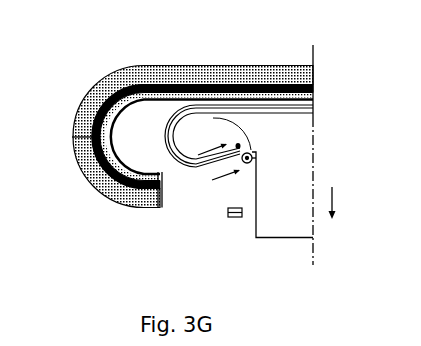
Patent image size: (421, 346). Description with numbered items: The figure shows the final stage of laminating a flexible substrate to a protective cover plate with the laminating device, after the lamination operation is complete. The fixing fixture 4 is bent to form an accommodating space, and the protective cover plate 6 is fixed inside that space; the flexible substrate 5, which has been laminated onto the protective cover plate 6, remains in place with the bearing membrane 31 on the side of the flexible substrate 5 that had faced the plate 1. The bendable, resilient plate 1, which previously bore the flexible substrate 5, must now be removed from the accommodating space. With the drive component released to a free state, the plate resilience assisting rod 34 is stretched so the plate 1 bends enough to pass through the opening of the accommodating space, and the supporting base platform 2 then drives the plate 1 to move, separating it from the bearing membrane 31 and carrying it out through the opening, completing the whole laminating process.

The plate 1 is at (167, 133).
The supporting base platform 2 is at (283, 222).
The fixing fixture 4 is at (160, 74).
The flexible substrate 5 is at (260, 102).
The protective cover plate 6 is at (223, 100).
The bearing membrane 31 is at (163, 193).
The plate resilience assisting rod 34 is at (238, 146).